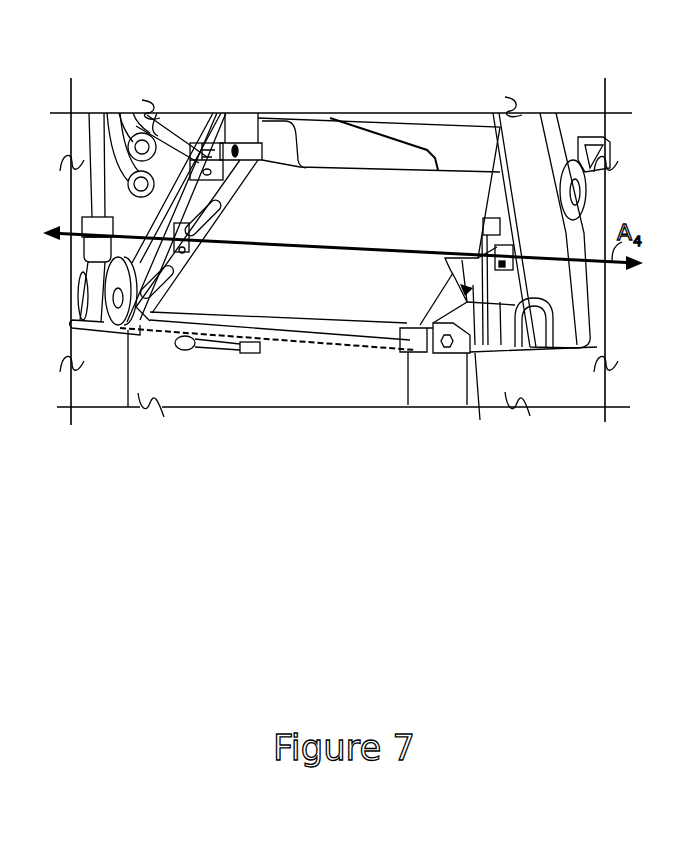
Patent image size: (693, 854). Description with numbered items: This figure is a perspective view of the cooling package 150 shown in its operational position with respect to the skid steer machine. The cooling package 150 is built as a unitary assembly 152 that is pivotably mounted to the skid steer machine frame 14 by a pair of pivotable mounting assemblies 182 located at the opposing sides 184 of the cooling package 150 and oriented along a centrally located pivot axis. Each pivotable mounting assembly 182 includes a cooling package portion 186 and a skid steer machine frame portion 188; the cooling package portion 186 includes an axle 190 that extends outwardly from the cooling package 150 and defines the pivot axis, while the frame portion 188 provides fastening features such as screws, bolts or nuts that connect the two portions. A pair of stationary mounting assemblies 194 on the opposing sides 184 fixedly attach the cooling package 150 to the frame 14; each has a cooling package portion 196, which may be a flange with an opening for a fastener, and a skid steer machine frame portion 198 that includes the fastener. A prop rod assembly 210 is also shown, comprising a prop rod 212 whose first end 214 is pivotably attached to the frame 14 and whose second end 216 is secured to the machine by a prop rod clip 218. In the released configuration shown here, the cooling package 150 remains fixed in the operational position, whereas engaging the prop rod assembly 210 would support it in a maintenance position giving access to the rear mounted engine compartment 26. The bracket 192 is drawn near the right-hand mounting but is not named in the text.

The skid steer machine frame 14 is at (128, 410).
The rear mounted engine compartment 26 is at (100, 364).
The cooling package 150 is at (395, 185).
The unitary assembly 152 is at (448, 185).
The pivotable mounting assembly 182 is at (178, 218).
The opposing sides 184 is at (160, 224).
The cooling package portion 186 is at (503, 215).
The skid steer machine frame portion 188 is at (188, 220).
The axle 190 is at (513, 353).
The mounting bracket 192 is at (487, 255).
The stationary mounting assembly 194 is at (447, 370).
The cooling package portion 196 is at (430, 353).
The skid steer machine frame portion 198 is at (470, 352).
The prop rod assembly 210 is at (205, 362).
The prop rod 212 is at (220, 372).
The first end 214 is at (183, 362).
The second end 216 is at (247, 370).
The prop rod clip 218 is at (262, 360).